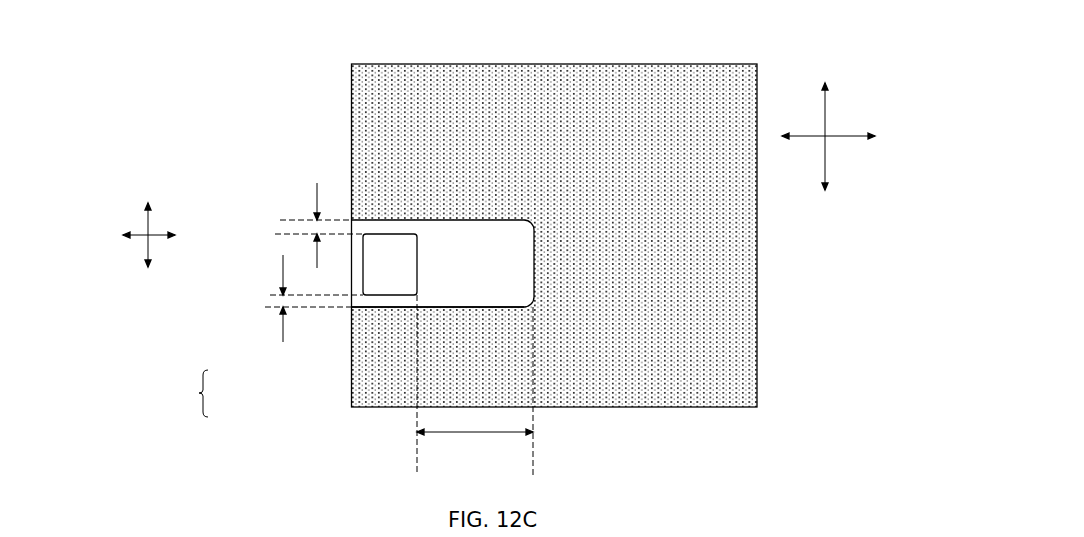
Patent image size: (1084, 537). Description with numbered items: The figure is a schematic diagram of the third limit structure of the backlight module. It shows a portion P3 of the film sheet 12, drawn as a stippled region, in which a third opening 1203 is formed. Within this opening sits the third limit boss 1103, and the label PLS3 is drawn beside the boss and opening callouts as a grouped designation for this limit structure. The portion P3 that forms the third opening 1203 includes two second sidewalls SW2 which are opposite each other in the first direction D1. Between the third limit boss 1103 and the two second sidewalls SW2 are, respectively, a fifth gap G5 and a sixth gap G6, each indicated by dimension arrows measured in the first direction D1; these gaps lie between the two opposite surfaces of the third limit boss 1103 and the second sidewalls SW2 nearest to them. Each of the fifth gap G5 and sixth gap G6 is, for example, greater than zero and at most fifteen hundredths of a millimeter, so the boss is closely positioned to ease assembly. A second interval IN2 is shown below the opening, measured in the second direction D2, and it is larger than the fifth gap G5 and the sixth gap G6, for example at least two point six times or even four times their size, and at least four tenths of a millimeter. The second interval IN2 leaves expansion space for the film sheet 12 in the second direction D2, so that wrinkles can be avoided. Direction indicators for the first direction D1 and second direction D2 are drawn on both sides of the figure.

The film sheet 12 is at (546, 235).
The portion of the film sheet P3 is at (372, 167).
The second sidewalls SW2 is at (393, 218).
The third limit boss 1103 is at (385, 282).
The third opening 1203 is at (394, 301).
The third pad layer structure PLS/ PLS3 is at (147, 393).
The fifth gap G5 is at (301, 225).
The sixth gap G6 is at (265, 298).
The second interval IN2 is at (475, 447).
The first direction D1 is at (488, 156).
The second direction D2 is at (518, 185).